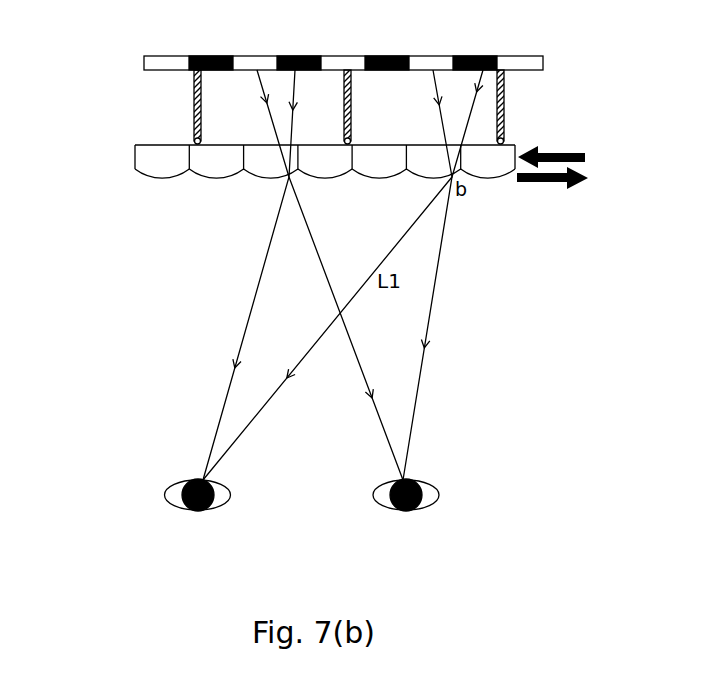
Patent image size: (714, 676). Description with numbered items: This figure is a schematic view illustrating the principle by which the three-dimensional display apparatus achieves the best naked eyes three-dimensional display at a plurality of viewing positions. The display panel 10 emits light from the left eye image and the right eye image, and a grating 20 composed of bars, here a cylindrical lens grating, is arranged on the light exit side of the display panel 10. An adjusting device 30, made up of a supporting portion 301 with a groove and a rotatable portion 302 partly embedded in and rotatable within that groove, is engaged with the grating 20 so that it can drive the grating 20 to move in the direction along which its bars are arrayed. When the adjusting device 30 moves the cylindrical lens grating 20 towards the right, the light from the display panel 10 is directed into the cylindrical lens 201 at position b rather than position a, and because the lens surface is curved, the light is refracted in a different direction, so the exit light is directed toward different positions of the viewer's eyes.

The display panel 10 is at (132, 58).
The adjusting device 30 is at (83, 70).
The supporting portion 301 is at (195, 96).
The rotatable portion 302 is at (195, 142).
The grating 20 is at (126, 166).
The cylindrical lens 201 is at (171, 170).